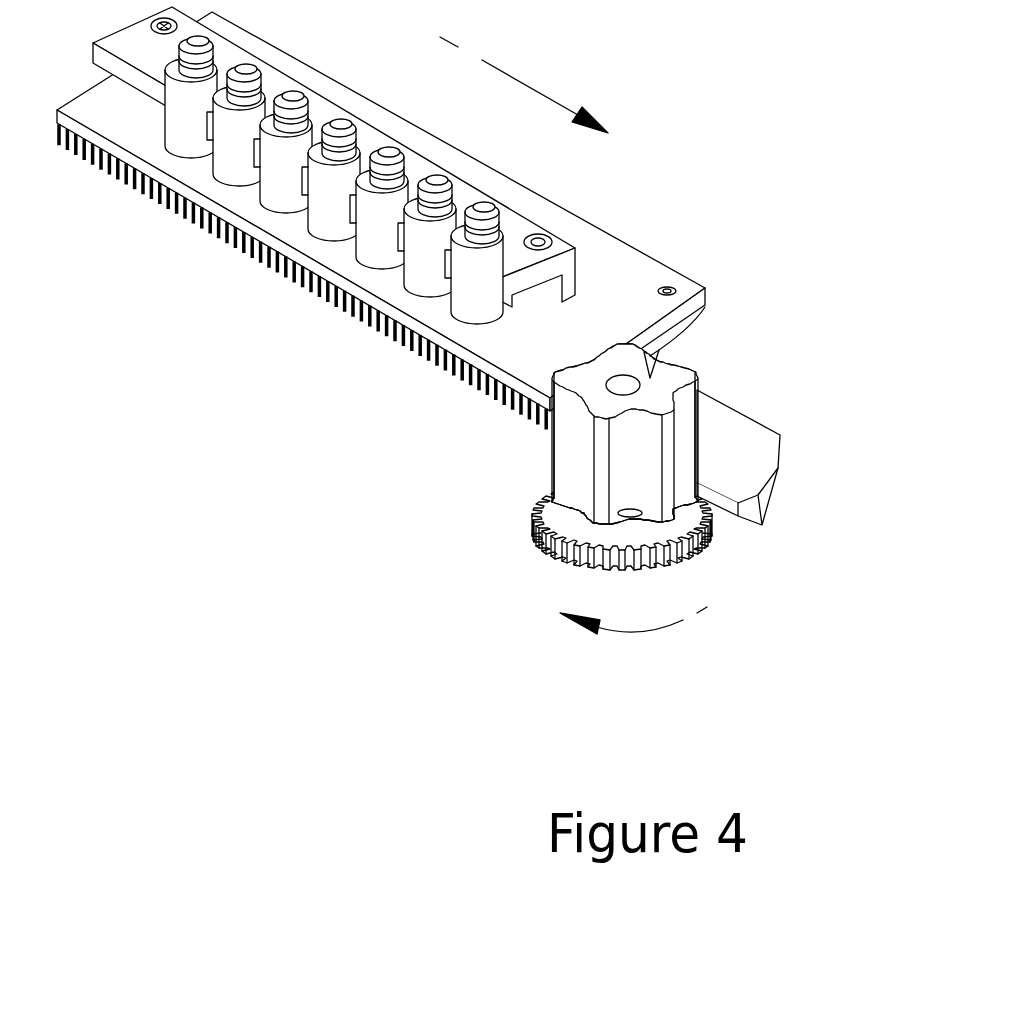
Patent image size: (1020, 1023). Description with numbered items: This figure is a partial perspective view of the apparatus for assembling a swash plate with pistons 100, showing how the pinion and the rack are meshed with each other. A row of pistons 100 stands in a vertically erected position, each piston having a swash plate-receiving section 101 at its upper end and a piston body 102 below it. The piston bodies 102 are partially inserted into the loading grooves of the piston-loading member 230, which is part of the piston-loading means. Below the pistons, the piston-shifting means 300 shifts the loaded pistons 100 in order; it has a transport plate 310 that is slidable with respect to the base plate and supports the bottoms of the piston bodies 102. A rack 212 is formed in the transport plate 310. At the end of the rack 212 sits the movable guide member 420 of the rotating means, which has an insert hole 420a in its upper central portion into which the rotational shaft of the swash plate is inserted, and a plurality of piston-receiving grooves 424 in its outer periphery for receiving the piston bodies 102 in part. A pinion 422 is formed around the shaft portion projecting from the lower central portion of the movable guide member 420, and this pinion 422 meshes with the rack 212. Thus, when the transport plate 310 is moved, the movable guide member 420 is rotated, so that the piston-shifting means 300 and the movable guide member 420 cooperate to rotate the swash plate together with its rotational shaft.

The piston 100 is at (296, 201).
The swash plate-receiving section 101 is at (275, 108).
The piston body 102 is at (283, 188).
The rack 212 is at (380, 328).
The piston-loading member 230 is at (573, 267).
The piston-shifting means 300 is at (668, 422).
The transport plate 310 is at (747, 465).
The movable guide member 420 is at (617, 383).
The insert hole 420a is at (605, 391).
The pinion 422 is at (698, 550).
The piston-receiving groove 424 is at (685, 364).